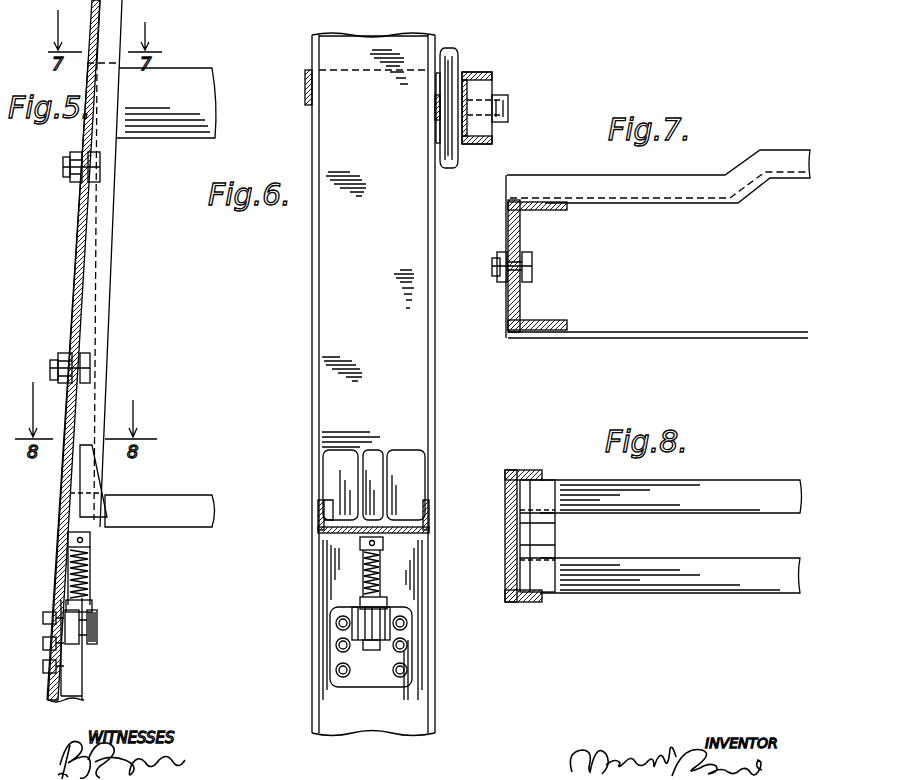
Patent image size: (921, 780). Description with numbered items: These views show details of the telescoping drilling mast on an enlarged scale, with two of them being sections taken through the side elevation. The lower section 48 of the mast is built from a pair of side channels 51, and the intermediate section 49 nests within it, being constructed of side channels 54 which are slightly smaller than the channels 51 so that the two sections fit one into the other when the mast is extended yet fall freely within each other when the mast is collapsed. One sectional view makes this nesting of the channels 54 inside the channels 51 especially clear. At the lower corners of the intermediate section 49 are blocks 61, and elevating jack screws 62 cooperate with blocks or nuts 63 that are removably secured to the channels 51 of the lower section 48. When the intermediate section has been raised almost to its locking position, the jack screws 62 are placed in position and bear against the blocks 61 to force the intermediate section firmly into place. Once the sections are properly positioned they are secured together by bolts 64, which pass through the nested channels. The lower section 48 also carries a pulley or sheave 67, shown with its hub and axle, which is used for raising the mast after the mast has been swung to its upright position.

In FIG. 5, the lower section of the mast 48 is at (75, 690).
In FIG. 6, the lower section of the mast 48 is at (408, 713).
In FIG. 7, the lower section of the mast 48 is at (506, 236).
In FIG. 8, the lower section of the mast 48 is at (505, 525).
In FIG. 5, the intermediate section of the mast 49 is at (112, 22).
In FIG. 6, the intermediate section of the mast 49 is at (428, 42).
In FIG. 7, the intermediate section of the mast 49 is at (658, 244).
In FIG. 8, the intermediate section of the mast 49 is at (505, 555).
In FIG. 7, the side channels 51 is at (507, 308).
In FIG. 8, the side channels 51 is at (505, 495).
In FIG. 7, the side channels 54 is at (520, 236).
In FIG. 8, the side channels 54 is at (540, 472).
In FIG. 5, the blocks 61 is at (86, 490).
In FIG. 6, the blocks 61 is at (412, 462).
In FIG. 8, the blocks 61 is at (555, 535).
In FIG. 5, the elevating jack screws 62 is at (90, 572).
In FIG. 6, the elevating jack screws 62 is at (383, 565).
In FIG. 5, the blocks or nuts 63 is at (97, 632).
In FIG. 6, the blocks or nuts 63 is at (405, 630).
In FIG. 5, the bolts 64 is at (98, 170).
In FIG. 7, the bolts 64 is at (530, 262).
In FIG. 6, the pulley or sheave 67 is at (457, 60).